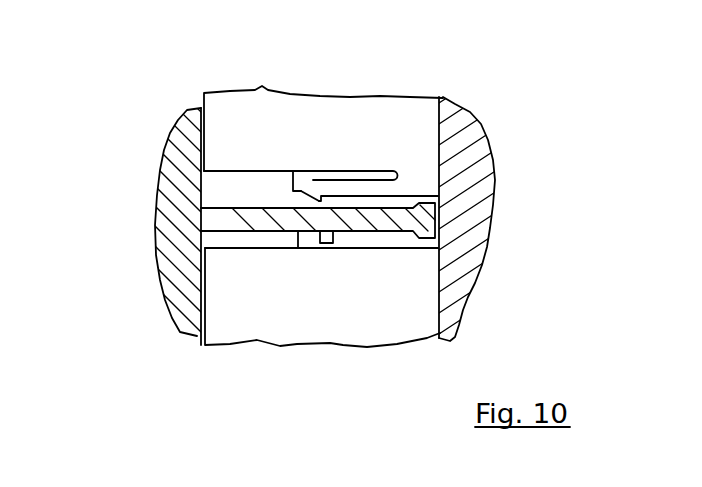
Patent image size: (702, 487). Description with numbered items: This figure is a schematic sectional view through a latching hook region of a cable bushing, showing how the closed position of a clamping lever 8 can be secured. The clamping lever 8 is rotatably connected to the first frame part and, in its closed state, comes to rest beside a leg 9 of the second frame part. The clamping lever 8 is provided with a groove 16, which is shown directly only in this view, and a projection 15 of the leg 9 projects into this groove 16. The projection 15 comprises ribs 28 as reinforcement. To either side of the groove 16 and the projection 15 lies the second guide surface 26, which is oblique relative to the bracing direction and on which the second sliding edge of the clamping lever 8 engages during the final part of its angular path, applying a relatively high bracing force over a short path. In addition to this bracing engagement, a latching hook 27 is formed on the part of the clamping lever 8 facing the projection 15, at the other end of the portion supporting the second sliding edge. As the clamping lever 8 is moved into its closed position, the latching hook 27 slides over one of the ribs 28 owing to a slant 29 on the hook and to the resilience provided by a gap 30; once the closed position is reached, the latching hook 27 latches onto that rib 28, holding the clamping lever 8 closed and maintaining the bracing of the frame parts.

The clamping lever 8 is at (480, 188).
The leg 9 is at (177, 169).
The projection 15 is at (213, 241).
The groove 16 is at (350, 243).
The second guide surface 26 is at (238, 180).
The latching hook 27 is at (308, 185).
The rib 28 is at (326, 202).
The slant 29 is at (303, 197).
The gap 30 is at (329, 179).